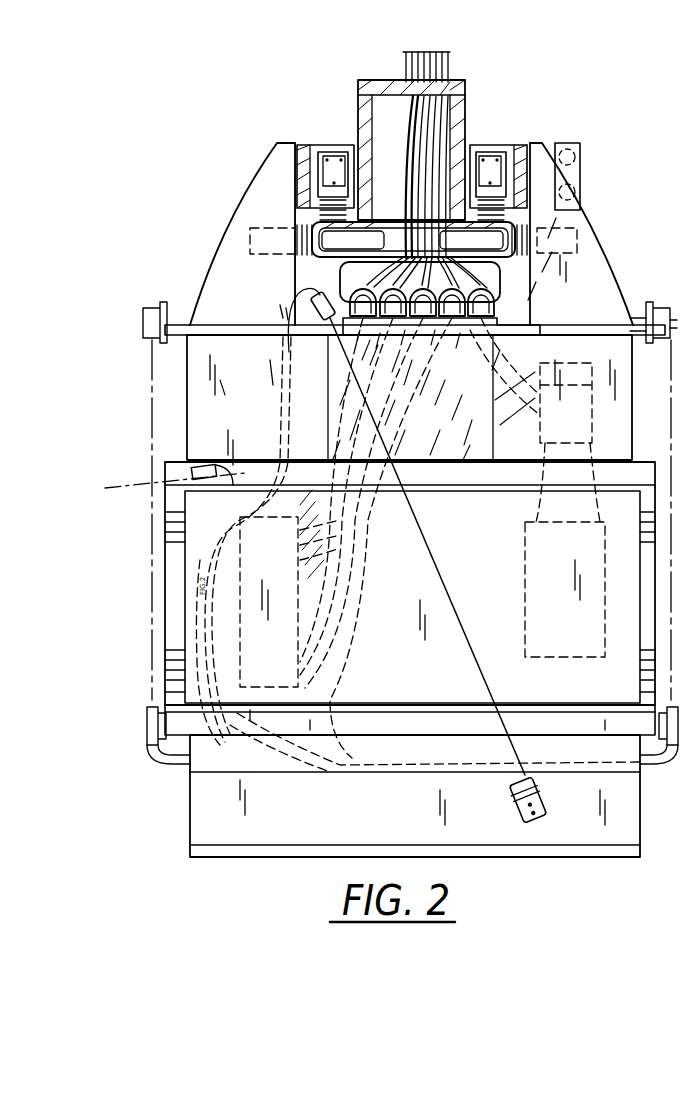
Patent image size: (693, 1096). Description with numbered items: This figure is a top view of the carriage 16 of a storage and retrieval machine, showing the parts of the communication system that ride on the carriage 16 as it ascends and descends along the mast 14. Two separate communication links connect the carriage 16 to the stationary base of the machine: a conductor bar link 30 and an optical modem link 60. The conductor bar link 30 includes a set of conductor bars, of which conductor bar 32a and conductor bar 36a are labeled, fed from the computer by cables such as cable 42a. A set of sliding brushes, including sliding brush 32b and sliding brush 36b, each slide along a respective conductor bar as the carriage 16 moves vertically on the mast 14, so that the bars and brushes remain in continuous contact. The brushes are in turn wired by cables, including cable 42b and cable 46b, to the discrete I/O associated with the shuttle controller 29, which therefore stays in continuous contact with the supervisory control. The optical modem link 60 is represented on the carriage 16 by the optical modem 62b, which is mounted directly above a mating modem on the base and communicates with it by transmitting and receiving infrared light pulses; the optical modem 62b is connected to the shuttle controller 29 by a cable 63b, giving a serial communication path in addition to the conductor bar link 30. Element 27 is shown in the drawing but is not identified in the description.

The mast 14 is at (332, 116).
The carriage 16 is at (668, 294).
The right control module 27 is at (565, 665).
The shuttle controller 29 is at (282, 690).
The conductor bar link 30 is at (332, 273).
The conductor bar 32a is at (353, 242).
The sliding brush 32b is at (305, 352).
The conductor bar 36a is at (471, 242).
The sliding brush 36b is at (490, 312).
The cable 42a is at (405, 63).
The cable 42b is at (355, 438).
The cable 46b is at (450, 63).
The optical modem link 60 is at (604, 137).
The optical modem 62b is at (583, 173).
The cable 63b is at (360, 660).